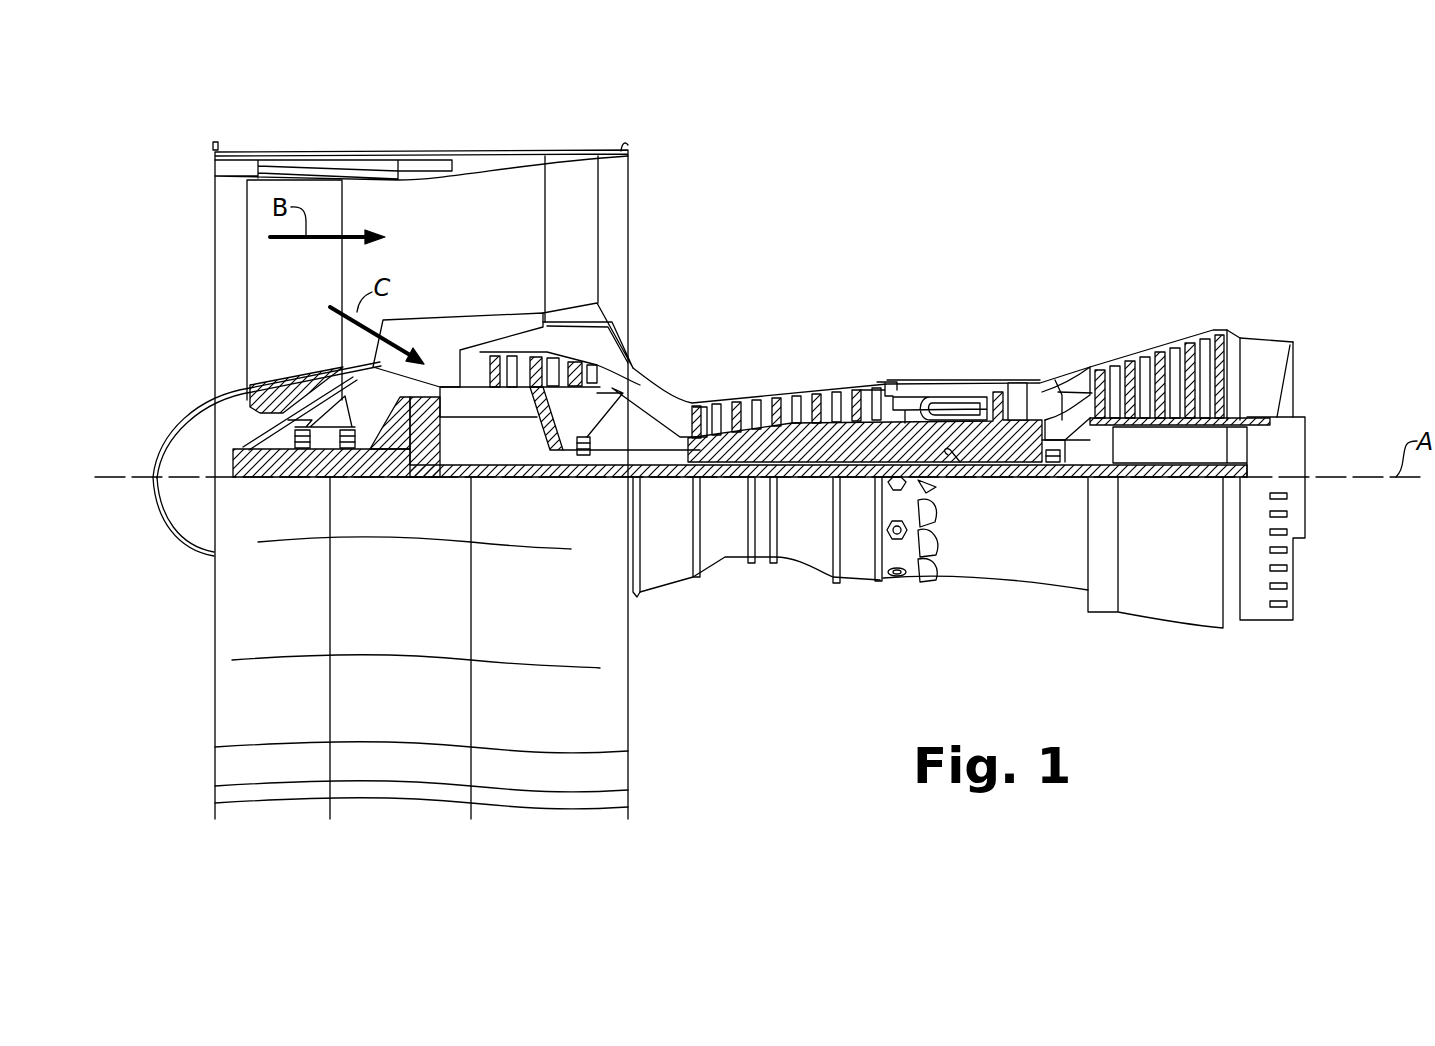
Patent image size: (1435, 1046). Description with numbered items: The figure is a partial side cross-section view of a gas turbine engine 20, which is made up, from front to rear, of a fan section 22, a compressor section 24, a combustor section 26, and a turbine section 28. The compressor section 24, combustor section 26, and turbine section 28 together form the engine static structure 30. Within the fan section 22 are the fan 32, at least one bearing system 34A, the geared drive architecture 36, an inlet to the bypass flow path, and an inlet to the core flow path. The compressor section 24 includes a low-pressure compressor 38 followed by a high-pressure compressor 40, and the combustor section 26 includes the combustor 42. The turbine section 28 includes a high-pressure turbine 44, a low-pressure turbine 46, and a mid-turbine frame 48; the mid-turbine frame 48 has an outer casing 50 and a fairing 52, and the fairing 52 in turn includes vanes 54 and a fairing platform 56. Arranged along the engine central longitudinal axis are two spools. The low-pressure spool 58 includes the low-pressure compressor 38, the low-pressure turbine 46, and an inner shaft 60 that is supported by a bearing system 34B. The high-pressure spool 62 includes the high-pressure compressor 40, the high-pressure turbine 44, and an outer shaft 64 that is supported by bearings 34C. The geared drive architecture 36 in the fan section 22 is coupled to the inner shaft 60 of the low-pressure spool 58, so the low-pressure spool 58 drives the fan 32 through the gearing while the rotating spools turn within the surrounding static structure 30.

The gas turbine engine 20 is at (1005, 210).
The fan section 22 is at (212, 124).
The compressor section 24 is at (880, 284).
The combustor section 26 is at (880, 284).
The turbine section 28 is at (1235, 284).
The engine static structure 30 is at (855, 591).
The fan 32 is at (283, 285).
The bearing system 34A is at (301, 453).
The bearing system 34B is at (582, 454).
The bearings 34C is at (1040, 457).
The geared drive architecture 36 is at (427, 453).
The low-pressure compressor 38 is at (557, 360).
The high-pressure compressor 40 is at (788, 400).
The combustor 42 is at (940, 410).
The high-pressure turbine 44 is at (1020, 383).
The low-pressure turbine 46 is at (1185, 330).
The mid-turbine frame 48 is at (1091, 349).
The outer casing 50 is at (1050, 377).
The fairing 52 is at (1068, 353).
The vanes 54 is at (1065, 402).
The fairing platform 56 is at (1080, 413).
The low-pressure spool 58 is at (800, 496).
The inner shaft 60 is at (653, 478).
The high-pressure spool 62 is at (827, 440).
The outer shaft 64 is at (960, 457).